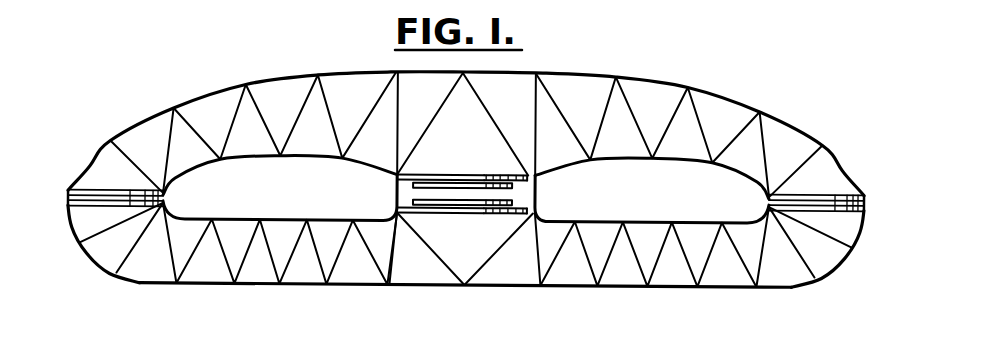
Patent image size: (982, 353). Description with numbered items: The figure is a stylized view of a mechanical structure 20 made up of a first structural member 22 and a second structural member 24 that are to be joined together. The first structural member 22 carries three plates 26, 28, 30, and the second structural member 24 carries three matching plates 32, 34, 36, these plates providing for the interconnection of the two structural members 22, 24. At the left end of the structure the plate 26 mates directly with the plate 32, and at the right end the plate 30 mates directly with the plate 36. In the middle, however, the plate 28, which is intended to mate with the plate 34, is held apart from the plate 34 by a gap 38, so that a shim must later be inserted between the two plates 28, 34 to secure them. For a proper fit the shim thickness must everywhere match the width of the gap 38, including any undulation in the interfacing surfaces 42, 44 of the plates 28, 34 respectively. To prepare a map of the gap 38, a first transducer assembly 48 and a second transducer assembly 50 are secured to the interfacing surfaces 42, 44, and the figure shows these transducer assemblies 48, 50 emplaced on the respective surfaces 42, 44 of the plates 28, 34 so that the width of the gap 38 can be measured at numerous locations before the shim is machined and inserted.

The mechanical structure 20 is at (150, 92).
The first structural member 22 is at (245, 86).
The second structural member 24 is at (192, 287).
The plate 26 is at (68, 193).
The plate 28 is at (449, 173).
The plate 30 is at (866, 193).
The plate 32 is at (67, 208).
The plate 34 is at (441, 216).
The plate 36 is at (866, 210).
The gap 38 is at (528, 196).
The interfacing surface 42 is at (400, 184).
The interfacing surface 44 is at (398, 199).
The first transducer assembly 48 is at (489, 172).
The second transducer assembly 50 is at (490, 216).